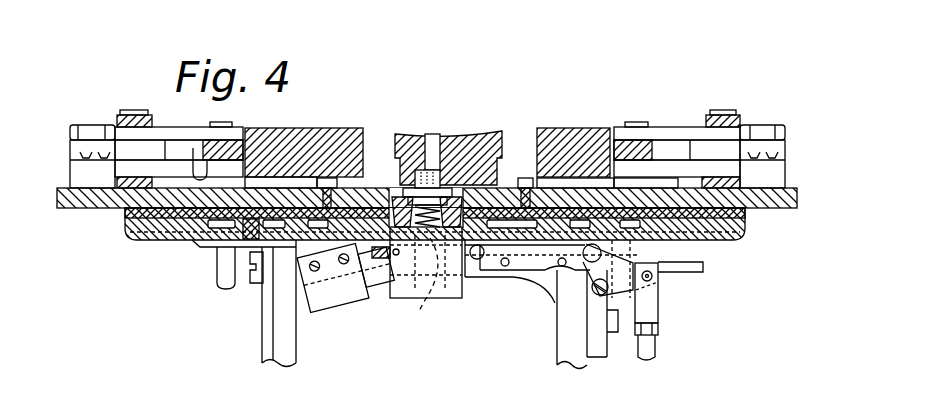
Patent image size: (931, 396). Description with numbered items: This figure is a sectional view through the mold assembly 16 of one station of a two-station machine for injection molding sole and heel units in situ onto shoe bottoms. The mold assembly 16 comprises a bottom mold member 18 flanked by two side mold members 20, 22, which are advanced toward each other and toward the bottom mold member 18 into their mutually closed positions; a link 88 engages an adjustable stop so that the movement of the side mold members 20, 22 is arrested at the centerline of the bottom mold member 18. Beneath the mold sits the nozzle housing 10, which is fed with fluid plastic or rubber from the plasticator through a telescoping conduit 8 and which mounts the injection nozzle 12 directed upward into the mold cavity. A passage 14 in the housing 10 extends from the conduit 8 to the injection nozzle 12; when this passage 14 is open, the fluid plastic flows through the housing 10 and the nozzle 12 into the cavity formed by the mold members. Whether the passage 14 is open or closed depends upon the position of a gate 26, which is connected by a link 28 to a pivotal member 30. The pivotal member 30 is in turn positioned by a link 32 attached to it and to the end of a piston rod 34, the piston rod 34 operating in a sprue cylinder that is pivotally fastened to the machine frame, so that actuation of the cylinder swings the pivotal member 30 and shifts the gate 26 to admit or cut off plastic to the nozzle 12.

The telescoping conduit 8 is at (307, 292).
The nozzle housing 10 is at (456, 298).
The injection nozzle 12 is at (440, 178).
The passage 14 is at (426, 300).
The mold assembly 16 is at (693, 95).
The bottom mold member 18 is at (435, 136).
The side mold member 20 is at (363, 158).
The side mold member 22 is at (537, 160).
The gate 26 is at (473, 277).
The link 28 is at (525, 258).
The pivotal member 30 is at (588, 278).
The link 32 is at (660, 309).
The piston rod 34 is at (656, 345).
The link 88 is at (182, 128).